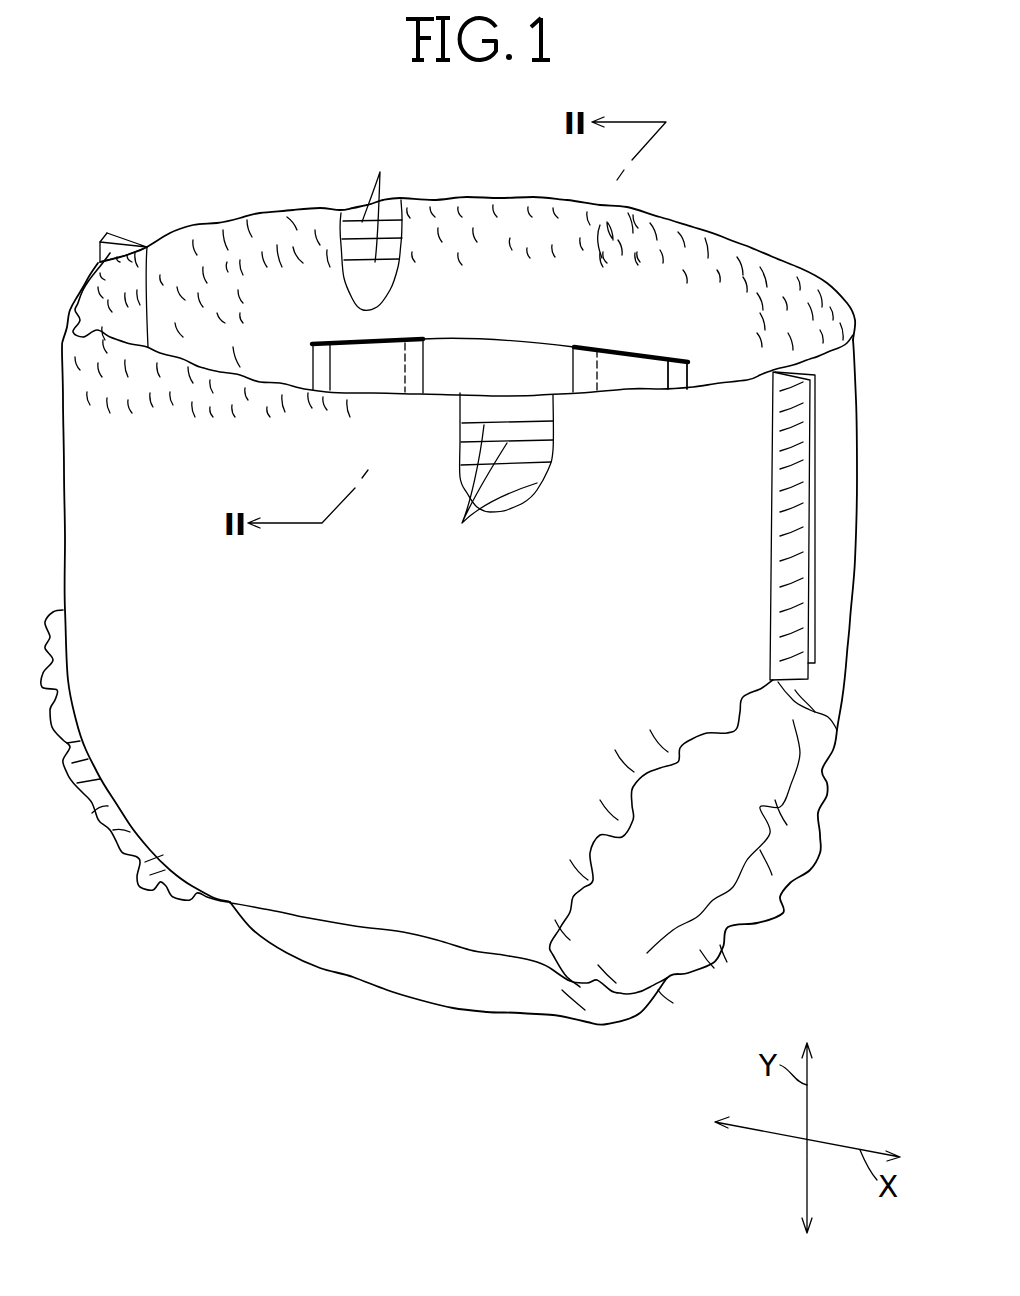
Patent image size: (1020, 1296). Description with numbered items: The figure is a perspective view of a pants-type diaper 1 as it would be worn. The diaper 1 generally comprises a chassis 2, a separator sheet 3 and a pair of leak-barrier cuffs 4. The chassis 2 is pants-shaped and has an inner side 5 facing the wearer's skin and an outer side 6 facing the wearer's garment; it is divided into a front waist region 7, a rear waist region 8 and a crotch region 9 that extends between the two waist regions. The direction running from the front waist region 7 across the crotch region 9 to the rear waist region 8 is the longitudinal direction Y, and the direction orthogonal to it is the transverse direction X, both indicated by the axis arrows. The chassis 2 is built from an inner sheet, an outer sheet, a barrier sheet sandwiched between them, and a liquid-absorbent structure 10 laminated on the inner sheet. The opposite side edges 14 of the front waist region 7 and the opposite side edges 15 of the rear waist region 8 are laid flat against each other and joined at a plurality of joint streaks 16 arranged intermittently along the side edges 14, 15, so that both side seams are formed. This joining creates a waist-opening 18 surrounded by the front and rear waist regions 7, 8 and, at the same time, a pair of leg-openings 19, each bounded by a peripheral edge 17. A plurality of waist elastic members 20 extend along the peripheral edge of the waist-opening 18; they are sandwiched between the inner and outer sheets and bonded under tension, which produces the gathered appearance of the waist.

The diaper 1 is at (853, 110).
The chassis 2 is at (738, 228).
The separator sheet 3 is at (610, 367).
The leak-barrier cuffs 4 is at (647, 370).
The inner side 5 is at (471, 307).
The outer side 6 is at (276, 682).
The front waist region 7 is at (170, 852).
The rear waist region 8 is at (620, 247).
The crotch region 9 is at (300, 940).
The liquid-absorbent structure 10 is at (525, 363).
The side edges of the front waist region 14 is at (100, 251).
The side edges of the rear waist region 15 is at (119, 237).
The joint streaks 16 is at (805, 516).
The peripheral edges 17 is at (828, 780).
The waist-opening 18 is at (280, 263).
The leg-openings 19 is at (790, 810).
The waist elastic members 20 is at (446, 352).